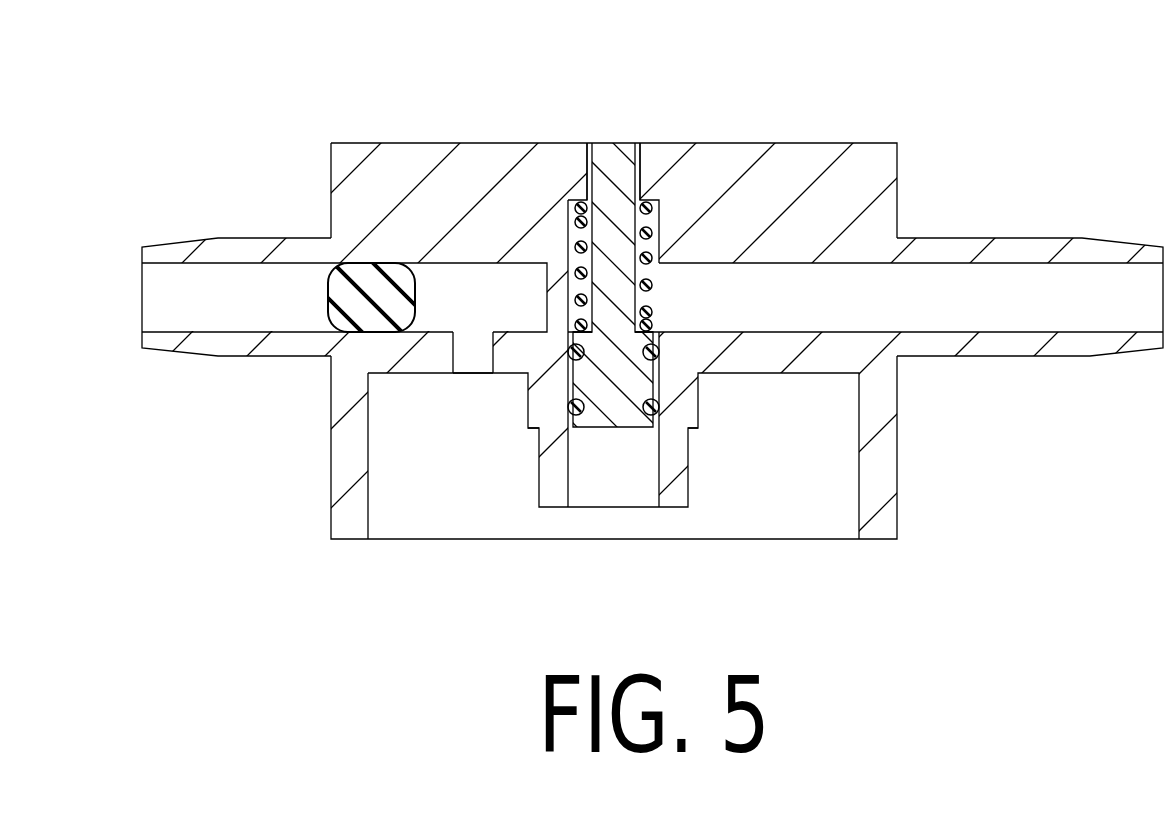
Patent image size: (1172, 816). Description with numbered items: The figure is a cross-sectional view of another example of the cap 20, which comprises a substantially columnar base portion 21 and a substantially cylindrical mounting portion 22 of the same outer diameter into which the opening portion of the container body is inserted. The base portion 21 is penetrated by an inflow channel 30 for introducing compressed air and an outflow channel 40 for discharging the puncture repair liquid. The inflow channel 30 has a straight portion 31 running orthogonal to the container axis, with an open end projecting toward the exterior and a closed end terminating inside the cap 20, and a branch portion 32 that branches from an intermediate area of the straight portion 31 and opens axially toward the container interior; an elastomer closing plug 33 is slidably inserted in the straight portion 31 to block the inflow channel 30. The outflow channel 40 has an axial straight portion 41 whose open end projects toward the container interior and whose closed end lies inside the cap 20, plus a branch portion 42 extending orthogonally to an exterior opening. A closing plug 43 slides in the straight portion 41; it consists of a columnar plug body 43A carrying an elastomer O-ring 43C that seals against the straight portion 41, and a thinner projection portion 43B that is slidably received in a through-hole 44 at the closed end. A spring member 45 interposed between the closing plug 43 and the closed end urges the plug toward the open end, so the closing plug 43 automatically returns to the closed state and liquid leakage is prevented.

The cap 20 is at (880, 105).
The base portion 21 is at (390, 146).
The mounting portion 22 is at (347, 515).
The inflow channel 30 is at (232, 385).
The straight portion 31 is at (295, 310).
The branch portion 32 is at (473, 353).
The closing plug 33 is at (503, 300).
The outflow channel 40 is at (1005, 392).
The straight portion 41 is at (622, 452).
The branch portion 42 is at (895, 303).
The closing plug 43 is at (595, 263).
The plug body 43A is at (610, 380).
The projection portion 43B is at (617, 160).
The O-ring 43C is at (660, 405).
The through-hole 44 is at (600, 163).
The spring member 45 is at (652, 284).